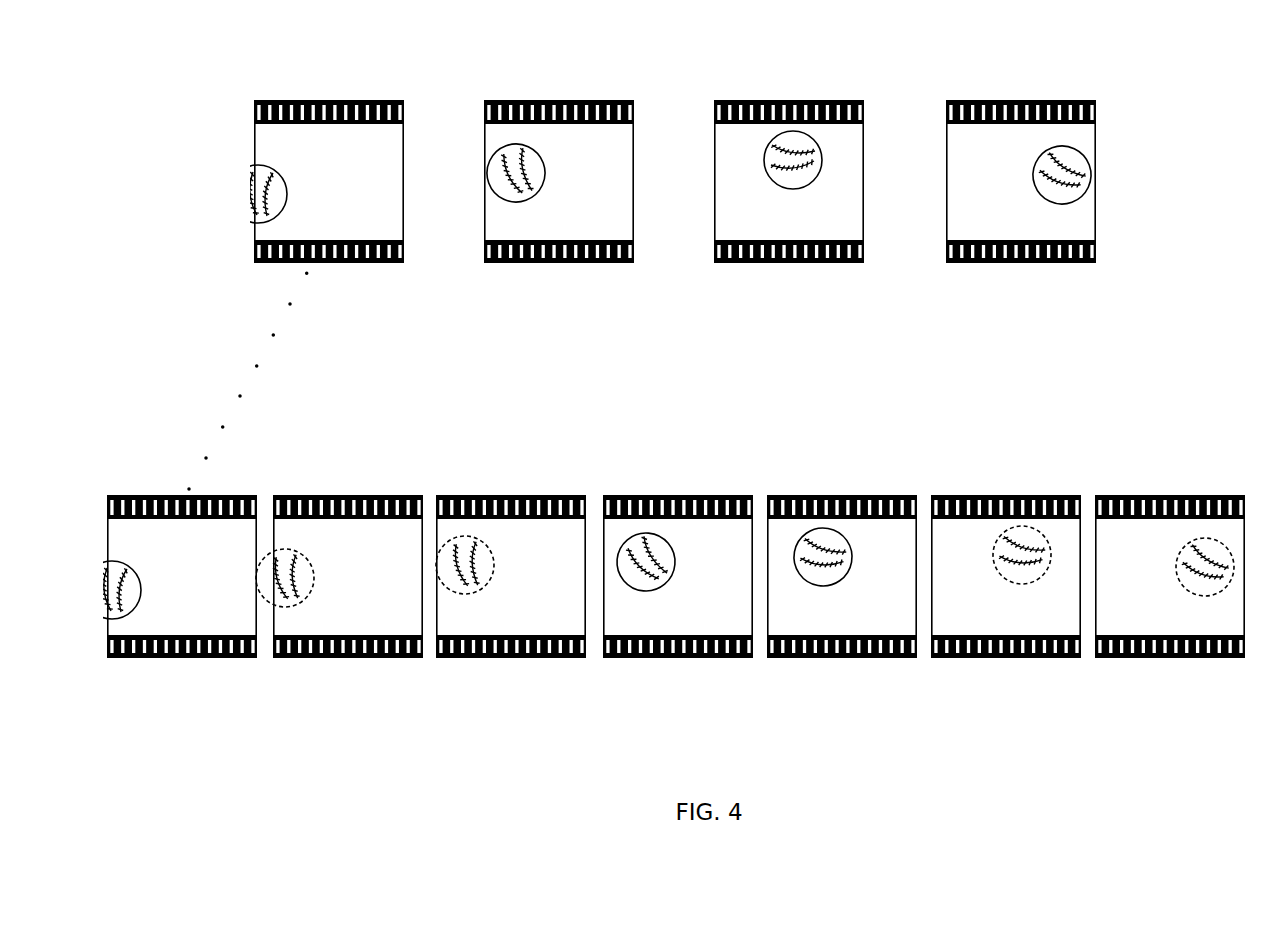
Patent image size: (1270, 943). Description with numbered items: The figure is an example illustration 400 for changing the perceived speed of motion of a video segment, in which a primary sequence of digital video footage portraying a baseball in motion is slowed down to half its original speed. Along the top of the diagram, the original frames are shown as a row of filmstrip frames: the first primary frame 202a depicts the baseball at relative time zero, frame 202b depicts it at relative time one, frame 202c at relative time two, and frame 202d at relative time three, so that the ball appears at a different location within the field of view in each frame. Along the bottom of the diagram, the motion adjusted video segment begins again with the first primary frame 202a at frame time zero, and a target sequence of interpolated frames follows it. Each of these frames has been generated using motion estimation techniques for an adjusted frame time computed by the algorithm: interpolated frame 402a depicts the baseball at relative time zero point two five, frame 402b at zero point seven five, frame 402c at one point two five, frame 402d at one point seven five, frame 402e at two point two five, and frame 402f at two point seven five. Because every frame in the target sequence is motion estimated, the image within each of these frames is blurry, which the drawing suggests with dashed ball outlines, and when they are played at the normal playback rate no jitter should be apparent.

The example illustration 400 is at (234, 82).
The first primary frame 202a is at (243, 393).
The primary frame 202b is at (556, 195).
The primary frame 202c is at (789, 195).
The primary frame 202d is at (1023, 195).
The interpolated frame 402a is at (337, 590).
The interpolated frame 402b is at (508, 590).
The interpolated frame 402c is at (678, 590).
The interpolated frame 402d is at (842, 590).
The interpolated frame 402e is at (1006, 590).
The interpolated frame 402f is at (1170, 590).